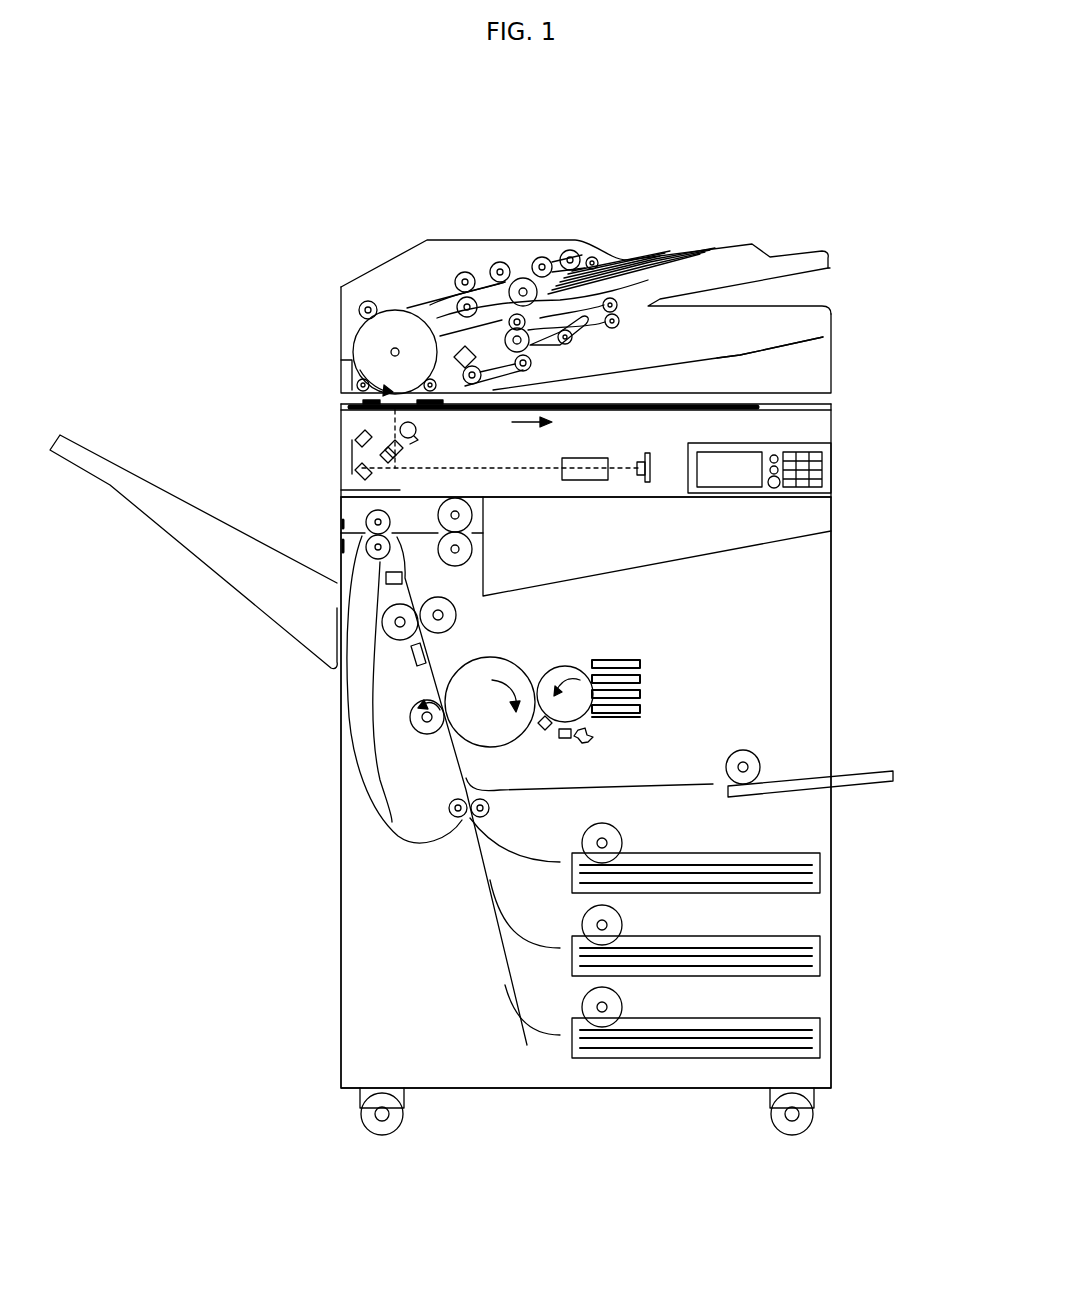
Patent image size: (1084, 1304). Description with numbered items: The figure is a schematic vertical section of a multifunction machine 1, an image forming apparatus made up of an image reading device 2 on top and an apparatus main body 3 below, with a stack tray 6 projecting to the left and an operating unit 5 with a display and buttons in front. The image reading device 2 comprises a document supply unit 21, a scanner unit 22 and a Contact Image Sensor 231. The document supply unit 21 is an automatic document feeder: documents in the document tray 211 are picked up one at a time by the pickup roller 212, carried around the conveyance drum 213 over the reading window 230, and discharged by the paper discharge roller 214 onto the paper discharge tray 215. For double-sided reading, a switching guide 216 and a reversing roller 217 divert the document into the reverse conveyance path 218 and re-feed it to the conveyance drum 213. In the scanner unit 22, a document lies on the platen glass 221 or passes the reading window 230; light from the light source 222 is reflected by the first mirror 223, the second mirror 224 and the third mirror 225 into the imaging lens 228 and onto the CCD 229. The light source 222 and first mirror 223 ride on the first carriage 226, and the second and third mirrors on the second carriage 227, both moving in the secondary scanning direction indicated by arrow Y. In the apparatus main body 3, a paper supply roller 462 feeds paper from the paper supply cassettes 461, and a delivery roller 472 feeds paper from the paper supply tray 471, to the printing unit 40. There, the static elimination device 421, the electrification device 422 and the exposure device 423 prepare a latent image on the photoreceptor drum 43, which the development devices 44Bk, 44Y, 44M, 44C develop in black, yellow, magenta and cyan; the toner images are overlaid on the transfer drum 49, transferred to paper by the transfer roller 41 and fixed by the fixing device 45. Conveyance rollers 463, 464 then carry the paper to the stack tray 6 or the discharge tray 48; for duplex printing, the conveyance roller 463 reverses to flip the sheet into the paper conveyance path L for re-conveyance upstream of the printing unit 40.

The multifunction machine 1 is at (280, 246).
The image reading device 2 is at (520, 190).
The document supply unit 21 is at (833, 368).
The scanner unit 22 is at (833, 416).
The document tray 211 is at (712, 268).
The pickup roller 212 is at (575, 252).
The conveyance drum 213 is at (352, 331).
The paper discharge roller 214 is at (532, 366).
The paper discharge tray 215 is at (717, 358).
The switching guide 216 is at (573, 348).
The reversing roller 217 is at (628, 320).
The reverse conveyance path 218 is at (456, 346).
The platen glass 221 is at (572, 409).
The light source 222 is at (413, 440).
The first mirror 223 is at (408, 458).
The second mirror 224 is at (352, 442).
The third mirror 225 is at (352, 471).
The first carriage 226 is at (417, 428).
The second carriage 227 is at (368, 493).
The imaging lens 228 is at (578, 482).
The CCD 229 is at (640, 482).
The reading window 230 is at (372, 406).
The Contact Image Sensor 231 is at (428, 300).
The apparatus main body 3 is at (809, 645).
The operating unit 5 is at (778, 491).
The stack tray 6 is at (246, 602).
The printing unit 40 is at (393, 702).
The transfer roller 41 is at (395, 816).
The photoreceptor drum 43 is at (573, 672).
The development device 44C is at (641, 664).
The development device 44M is at (641, 680).
The development device 44Y is at (641, 694).
The development device 44Bk is at (641, 710).
The fixing device 45 is at (398, 641).
The discharge tray 48 is at (735, 549).
The transfer drum 49 is at (481, 672).
The static elimination device 421 is at (542, 731).
The electrification device 422 is at (565, 741).
The exposure device 423 is at (590, 740).
The paper supply cassettes 461 is at (816, 880).
The paper supply roller 462 is at (621, 846).
The conveyance roller 463 is at (473, 517).
The conveyance roller 464 is at (360, 519).
The paper supply tray 471 is at (886, 773).
The delivery roller 472 is at (745, 751).
The paper conveyance path L is at (352, 692).
The arrow Y is at (530, 428).